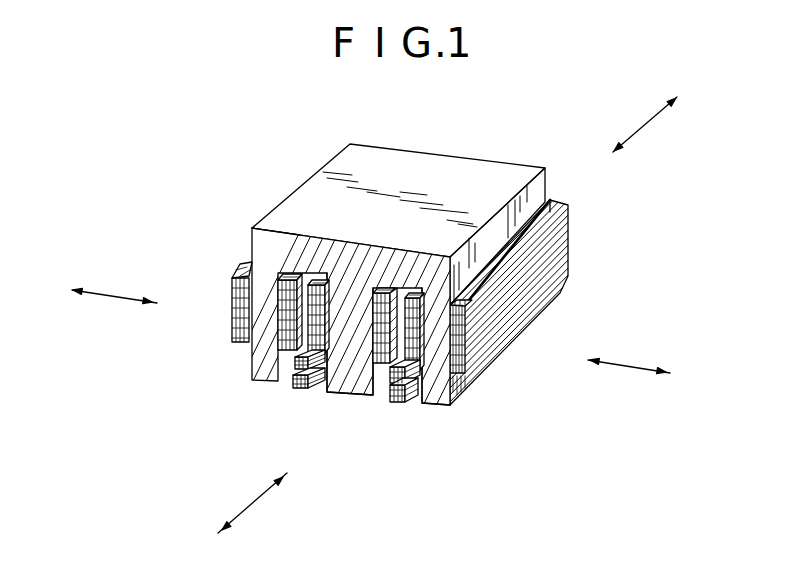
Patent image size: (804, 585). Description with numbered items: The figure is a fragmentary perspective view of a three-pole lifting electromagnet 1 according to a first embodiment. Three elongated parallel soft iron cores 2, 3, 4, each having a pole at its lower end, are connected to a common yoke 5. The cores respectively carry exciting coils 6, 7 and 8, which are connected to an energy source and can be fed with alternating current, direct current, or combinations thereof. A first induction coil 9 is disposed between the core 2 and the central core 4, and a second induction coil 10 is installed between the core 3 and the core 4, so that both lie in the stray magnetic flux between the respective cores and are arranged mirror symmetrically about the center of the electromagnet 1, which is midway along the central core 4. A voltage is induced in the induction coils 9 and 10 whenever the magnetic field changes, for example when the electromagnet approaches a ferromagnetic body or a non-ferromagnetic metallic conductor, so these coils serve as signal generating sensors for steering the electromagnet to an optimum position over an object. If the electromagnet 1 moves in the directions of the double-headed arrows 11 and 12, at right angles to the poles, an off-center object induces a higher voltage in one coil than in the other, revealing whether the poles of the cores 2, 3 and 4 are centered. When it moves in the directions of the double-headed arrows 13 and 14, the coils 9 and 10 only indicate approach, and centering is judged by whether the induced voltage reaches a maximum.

The lifting electromagnet 1 is at (480, 158).
The soft iron core 2 is at (258, 350).
The soft iron core 3 is at (440, 402).
The soft iron core 4 is at (365, 393).
The common yoke 5 is at (278, 251).
The exciting coil 6 is at (231, 292).
The exciting coil 7 is at (465, 345).
The exciting coil 8 is at (363, 390).
The first induction coil 9 is at (302, 388).
The second induction coil 10 is at (393, 403).
The double-headed arrow 11 is at (613, 368).
The double-headed arrow 12 is at (118, 297).
The double-headed arrow 13 is at (253, 502).
The double-headed arrow 14 is at (645, 125).